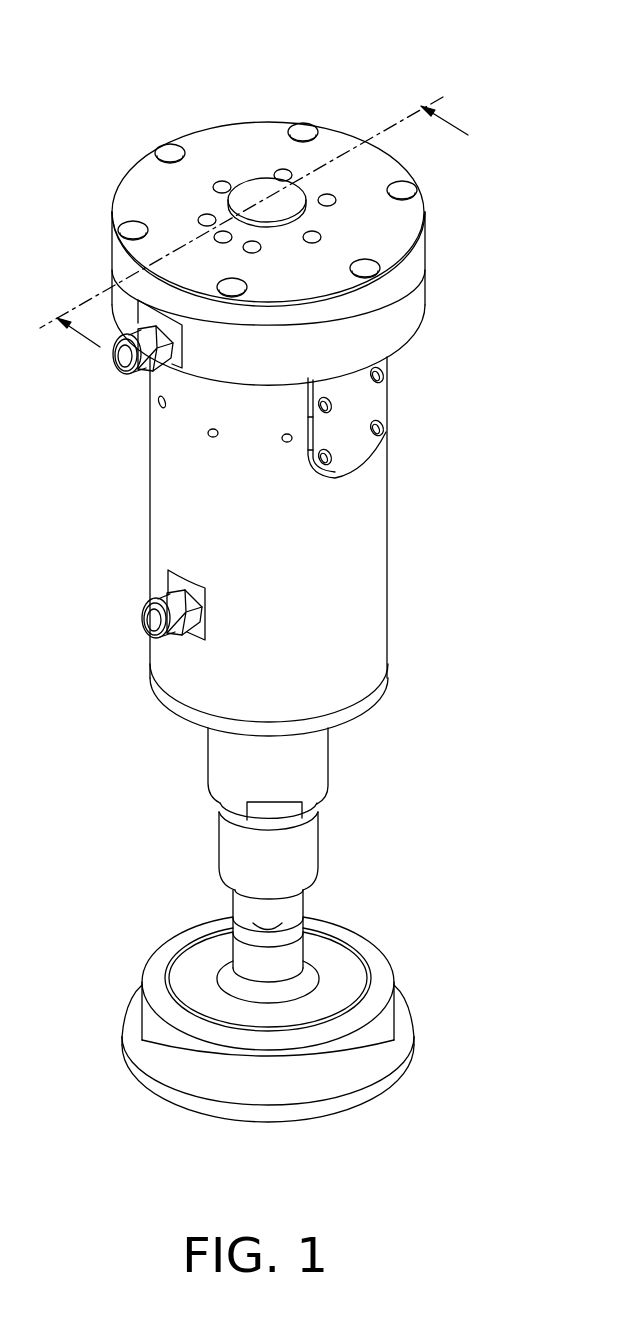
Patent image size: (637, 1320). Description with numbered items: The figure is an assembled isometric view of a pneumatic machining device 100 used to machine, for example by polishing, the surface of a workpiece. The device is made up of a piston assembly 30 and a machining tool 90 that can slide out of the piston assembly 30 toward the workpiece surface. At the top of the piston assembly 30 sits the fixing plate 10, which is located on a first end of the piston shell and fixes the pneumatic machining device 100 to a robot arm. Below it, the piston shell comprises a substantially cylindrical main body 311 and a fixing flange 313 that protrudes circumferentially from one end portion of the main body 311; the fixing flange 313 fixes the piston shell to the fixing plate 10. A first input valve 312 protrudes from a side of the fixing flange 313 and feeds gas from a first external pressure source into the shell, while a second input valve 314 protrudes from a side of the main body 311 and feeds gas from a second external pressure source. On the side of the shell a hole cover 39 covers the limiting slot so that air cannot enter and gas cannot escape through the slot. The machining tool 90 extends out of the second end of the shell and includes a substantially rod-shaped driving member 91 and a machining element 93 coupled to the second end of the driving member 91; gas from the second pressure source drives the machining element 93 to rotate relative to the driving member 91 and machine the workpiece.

The pneumatic machining device 100 is at (297, 34).
The fixing plate 10 is at (142, 200).
The fixing flange 313 is at (402, 303).
The piston assembly 30 is at (124, 508).
The main body 311 is at (355, 537).
The first input valve 312 is at (133, 377).
The second input valve 314 is at (155, 595).
The hole cover 39 is at (368, 407).
The machining tool 90 is at (487, 793).
The driving member 91 is at (310, 782).
The machining element 93 is at (378, 983).